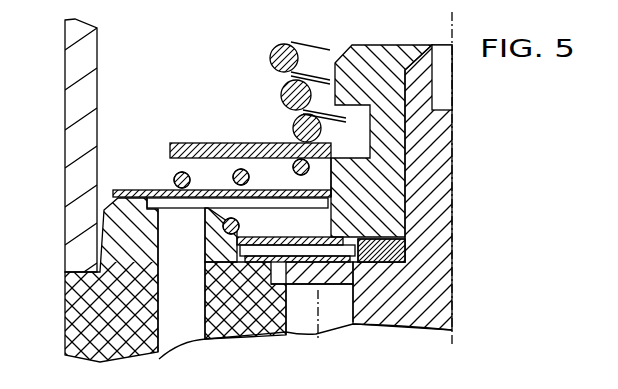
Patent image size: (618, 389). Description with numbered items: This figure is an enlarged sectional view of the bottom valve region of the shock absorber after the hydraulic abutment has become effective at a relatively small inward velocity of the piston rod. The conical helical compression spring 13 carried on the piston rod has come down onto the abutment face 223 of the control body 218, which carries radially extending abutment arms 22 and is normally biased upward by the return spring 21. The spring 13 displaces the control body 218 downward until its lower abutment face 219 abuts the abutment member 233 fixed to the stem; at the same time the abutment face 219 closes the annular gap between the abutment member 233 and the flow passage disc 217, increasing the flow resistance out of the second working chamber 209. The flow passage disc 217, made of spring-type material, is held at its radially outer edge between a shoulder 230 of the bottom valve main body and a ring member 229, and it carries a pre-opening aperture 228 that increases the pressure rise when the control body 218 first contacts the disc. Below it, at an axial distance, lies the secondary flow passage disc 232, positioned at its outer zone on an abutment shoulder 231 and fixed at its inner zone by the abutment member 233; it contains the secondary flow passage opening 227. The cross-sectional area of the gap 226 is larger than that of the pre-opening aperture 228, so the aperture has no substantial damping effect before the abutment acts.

The second working chamber 209 is at (180, 52).
The helical compression spring 13 is at (272, 58).
The abutment arms 22 is at (178, 143).
The abutment face 223 is at (236, 143).
The return spring 21 is at (175, 178).
The ring member 229 is at (240, 226).
The control body 218 is at (355, 168).
The flow passage disc 217 is at (300, 238).
The abutment face 219 is at (345, 252).
The abutment member 233 is at (405, 252).
The gap 226 is at (350, 270).
The secondary flow passage opening 227 is at (385, 318).
The shoulder 230 is at (250, 246).
The pre-opening aperture 228 is at (235, 262).
The abutment shoulder 231 is at (205, 342).
The secondary flow passage disc 232 is at (246, 262).